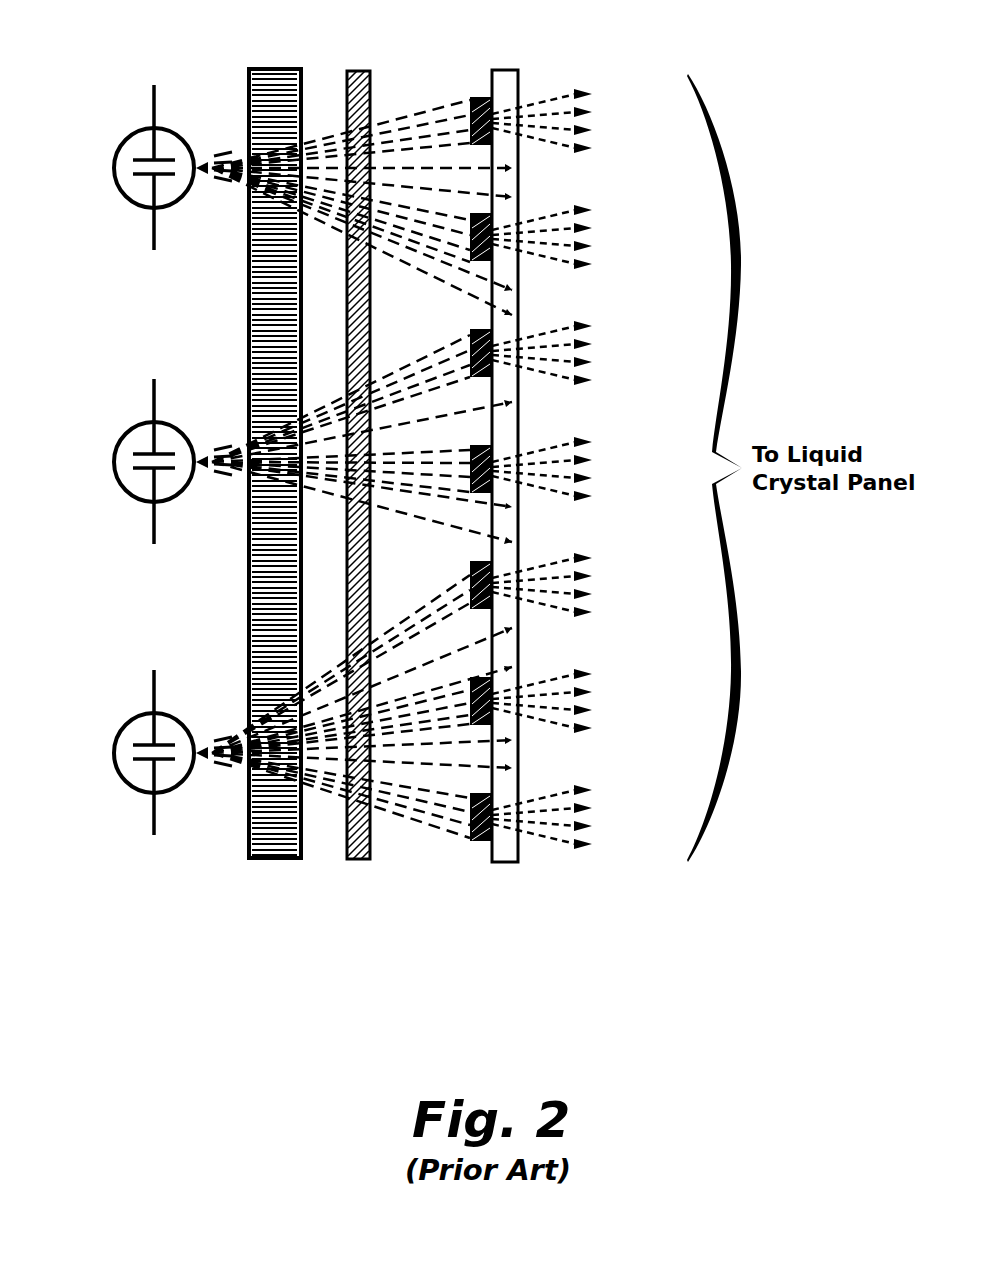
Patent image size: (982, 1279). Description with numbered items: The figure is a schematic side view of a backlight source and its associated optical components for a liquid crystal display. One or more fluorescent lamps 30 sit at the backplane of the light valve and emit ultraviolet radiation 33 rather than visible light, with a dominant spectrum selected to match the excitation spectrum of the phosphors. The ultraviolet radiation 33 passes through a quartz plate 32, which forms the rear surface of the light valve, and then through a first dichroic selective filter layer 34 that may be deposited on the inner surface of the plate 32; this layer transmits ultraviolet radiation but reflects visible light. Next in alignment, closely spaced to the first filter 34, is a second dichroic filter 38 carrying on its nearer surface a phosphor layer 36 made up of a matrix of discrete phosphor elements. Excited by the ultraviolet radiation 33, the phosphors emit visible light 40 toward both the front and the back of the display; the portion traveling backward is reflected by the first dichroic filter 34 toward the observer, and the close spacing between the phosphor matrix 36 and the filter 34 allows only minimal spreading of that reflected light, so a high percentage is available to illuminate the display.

The fluorescent lamp 30 is at (113, 166).
The plate 32 is at (275, 68).
The ultraviolet radiation 33 is at (323, 132).
The first dichroic selective filter layer 34 is at (358, 862).
The phosphor layer 36 is at (480, 850).
The second dichroic filter 38 is at (507, 70).
The visible light 40 is at (603, 108).